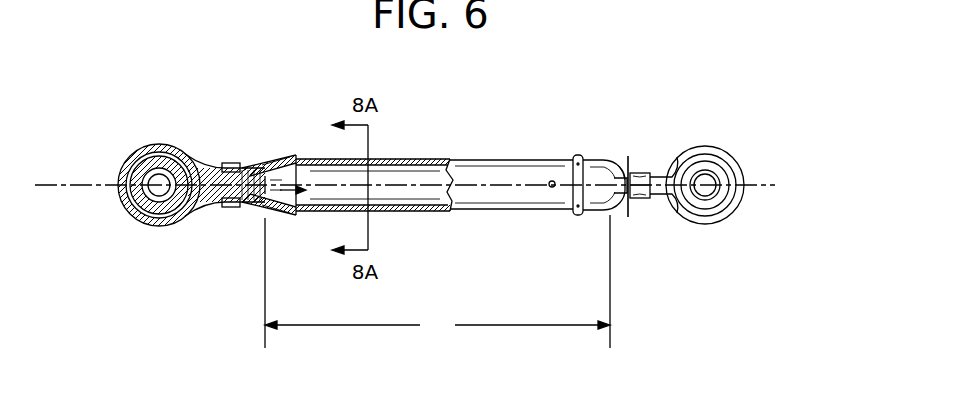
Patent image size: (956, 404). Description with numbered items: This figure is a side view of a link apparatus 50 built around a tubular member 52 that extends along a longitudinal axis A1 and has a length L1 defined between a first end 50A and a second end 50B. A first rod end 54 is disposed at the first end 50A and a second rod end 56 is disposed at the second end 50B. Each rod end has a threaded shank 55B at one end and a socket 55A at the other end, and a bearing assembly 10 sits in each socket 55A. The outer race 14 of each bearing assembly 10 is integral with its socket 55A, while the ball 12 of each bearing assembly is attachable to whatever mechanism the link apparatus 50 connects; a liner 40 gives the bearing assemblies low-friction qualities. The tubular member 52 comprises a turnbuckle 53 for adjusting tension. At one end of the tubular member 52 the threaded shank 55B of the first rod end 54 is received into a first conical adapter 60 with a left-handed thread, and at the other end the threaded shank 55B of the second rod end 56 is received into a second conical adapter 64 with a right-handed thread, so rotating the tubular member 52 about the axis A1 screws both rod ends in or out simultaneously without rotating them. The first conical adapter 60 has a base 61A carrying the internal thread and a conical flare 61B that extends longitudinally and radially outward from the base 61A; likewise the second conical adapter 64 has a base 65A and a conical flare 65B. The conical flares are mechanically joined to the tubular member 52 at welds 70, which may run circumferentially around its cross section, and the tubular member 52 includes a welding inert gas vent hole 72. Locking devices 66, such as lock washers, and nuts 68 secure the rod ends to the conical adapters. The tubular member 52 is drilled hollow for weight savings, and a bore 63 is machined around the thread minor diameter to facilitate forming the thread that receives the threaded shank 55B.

The bearing assembly 10 is at (120, 167).
The ball 12 is at (145, 197).
The outer race 14 is at (142, 153).
The liner 40 is at (180, 160).
The link apparatus 50 is at (442, 176).
The first end 50A is at (300, 220).
The second end 50B is at (558, 219).
The tubular member 52 is at (468, 160).
The turnbuckle 53 is at (510, 160).
The first rod end 54 is at (218, 204).
The socket 55A is at (150, 230).
The threaded shank 55B is at (227, 166).
The second rod end 56 is at (662, 200).
The first conical adapter 60 is at (265, 167).
The base 61A is at (236, 208).
The conical flare 61B is at (283, 158).
The bore 63 is at (276, 211).
The second conical adapter 64 is at (607, 158).
The base 65A is at (623, 167).
The conical flare 65B is at (577, 156).
The locking device 66 is at (630, 217).
The nut 68 is at (651, 171).
The weld 70 is at (300, 153).
The welding inert gas vent hole 72 is at (549, 189).
The longitudinal axis A1 is at (422, 185).
The length L1 is at (437, 281).